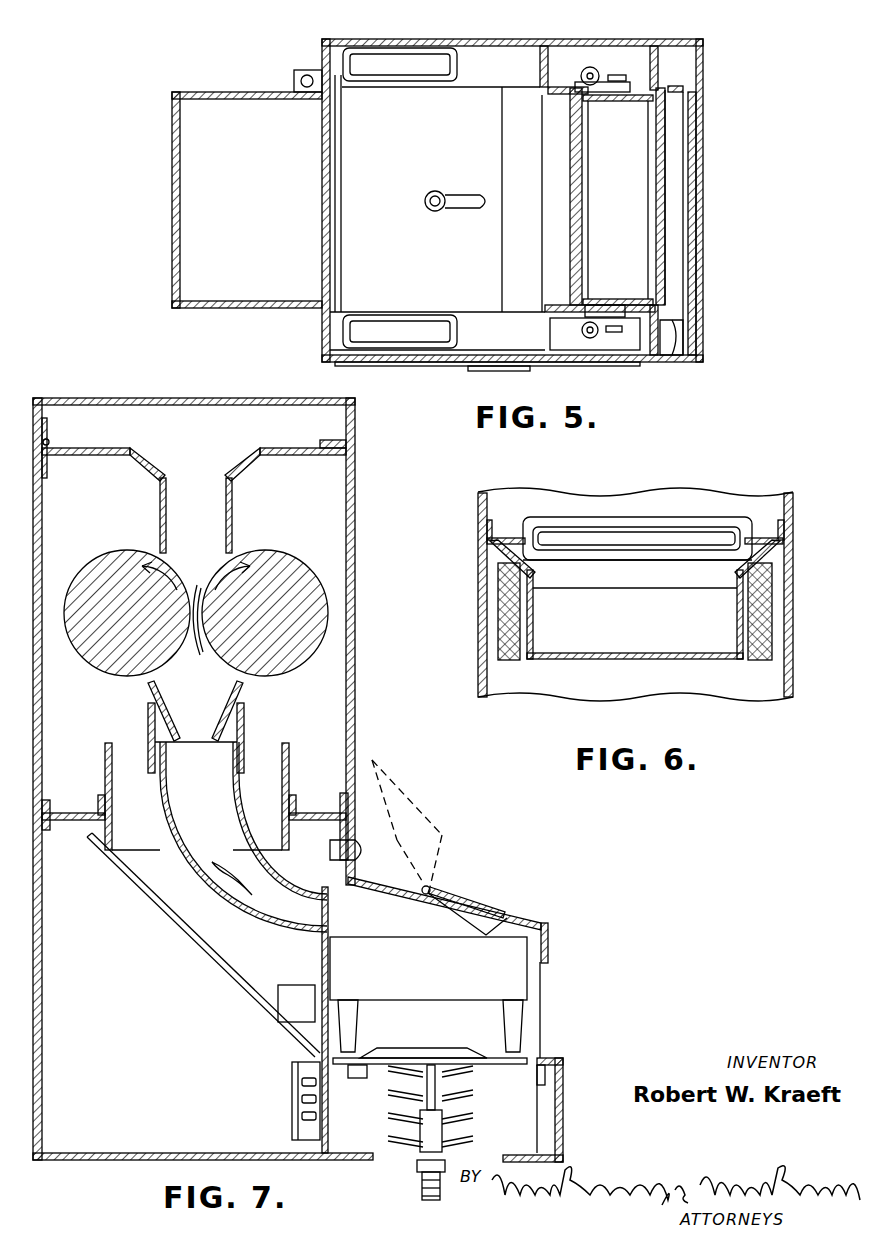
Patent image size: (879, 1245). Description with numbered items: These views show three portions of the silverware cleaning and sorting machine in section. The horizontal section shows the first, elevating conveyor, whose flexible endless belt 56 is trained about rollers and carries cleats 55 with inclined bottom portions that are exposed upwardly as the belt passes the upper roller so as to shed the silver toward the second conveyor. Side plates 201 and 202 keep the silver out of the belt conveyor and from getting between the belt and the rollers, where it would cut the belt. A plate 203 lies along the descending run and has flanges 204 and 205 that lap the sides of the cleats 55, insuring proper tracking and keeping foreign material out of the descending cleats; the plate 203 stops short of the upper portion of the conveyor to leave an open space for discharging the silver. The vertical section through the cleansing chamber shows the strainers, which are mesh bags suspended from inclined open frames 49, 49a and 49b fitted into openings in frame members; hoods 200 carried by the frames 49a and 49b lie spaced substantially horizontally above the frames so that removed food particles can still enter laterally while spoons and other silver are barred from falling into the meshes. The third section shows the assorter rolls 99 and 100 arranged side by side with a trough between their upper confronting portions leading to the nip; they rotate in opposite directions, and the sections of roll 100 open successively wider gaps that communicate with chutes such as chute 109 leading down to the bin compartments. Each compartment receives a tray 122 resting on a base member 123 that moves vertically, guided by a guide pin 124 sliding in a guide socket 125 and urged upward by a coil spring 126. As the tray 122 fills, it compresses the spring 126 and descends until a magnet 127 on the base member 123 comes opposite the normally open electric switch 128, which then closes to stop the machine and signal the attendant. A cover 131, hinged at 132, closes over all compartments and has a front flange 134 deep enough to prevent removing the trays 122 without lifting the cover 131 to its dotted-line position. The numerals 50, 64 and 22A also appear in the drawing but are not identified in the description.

In FIG. 5, the inclined top open frame 49 is at (378, 330).
In FIG. 6, the inclined top open frame 49 is at (762, 660).
In FIG. 6, the open frame 49a is at (745, 567).
In FIG. 6, the open frame 49b is at (525, 567).
In FIG. 5, the upper slot / cushion block 50 is at (410, 68).
In FIG. 6, the upper slot / cushion block 50 is at (508, 660).
In FIG. 5, the cleats 55 is at (670, 160).
In FIG. 5, the flexible endless belt 56 is at (572, 225).
In FIG. 5, the side box 64 is at (172, 208).
In FIG. 7, the assorter roll 99 is at (97, 572).
In FIG. 7, the assorter roll 100 is at (303, 585).
In FIG. 7, the chute 109 is at (198, 808).
In FIG. 7, the tray 122 is at (510, 968).
In FIG. 7, the base member 123 is at (503, 1066).
In FIG. 7, the guide pin 124 is at (430, 1085).
In FIG. 7, the guide socket 125 is at (440, 1128).
In FIG. 7, the coil spring 126 is at (392, 1117).
In FIG. 7, the magnet 127 is at (356, 1078).
In FIG. 7, the electric switch 128 is at (297, 1113).
In FIG. 7, the cover 131 is at (440, 806).
In FIG. 7, the hinge 132 is at (432, 887).
In FIG. 7, the front flange 134 is at (548, 945).
In FIG. 6, the hood 200 is at (520, 538).
In FIG. 5, the side plate 201 is at (618, 100).
In FIG. 5, the side plate 202 is at (612, 300).
In FIG. 5, the plate 203 is at (703, 197).
In FIG. 5, the flange 204 is at (670, 88).
In FIG. 5, the flange 205 is at (672, 355).
In FIG. 7, the chute 22A is at (226, 523).